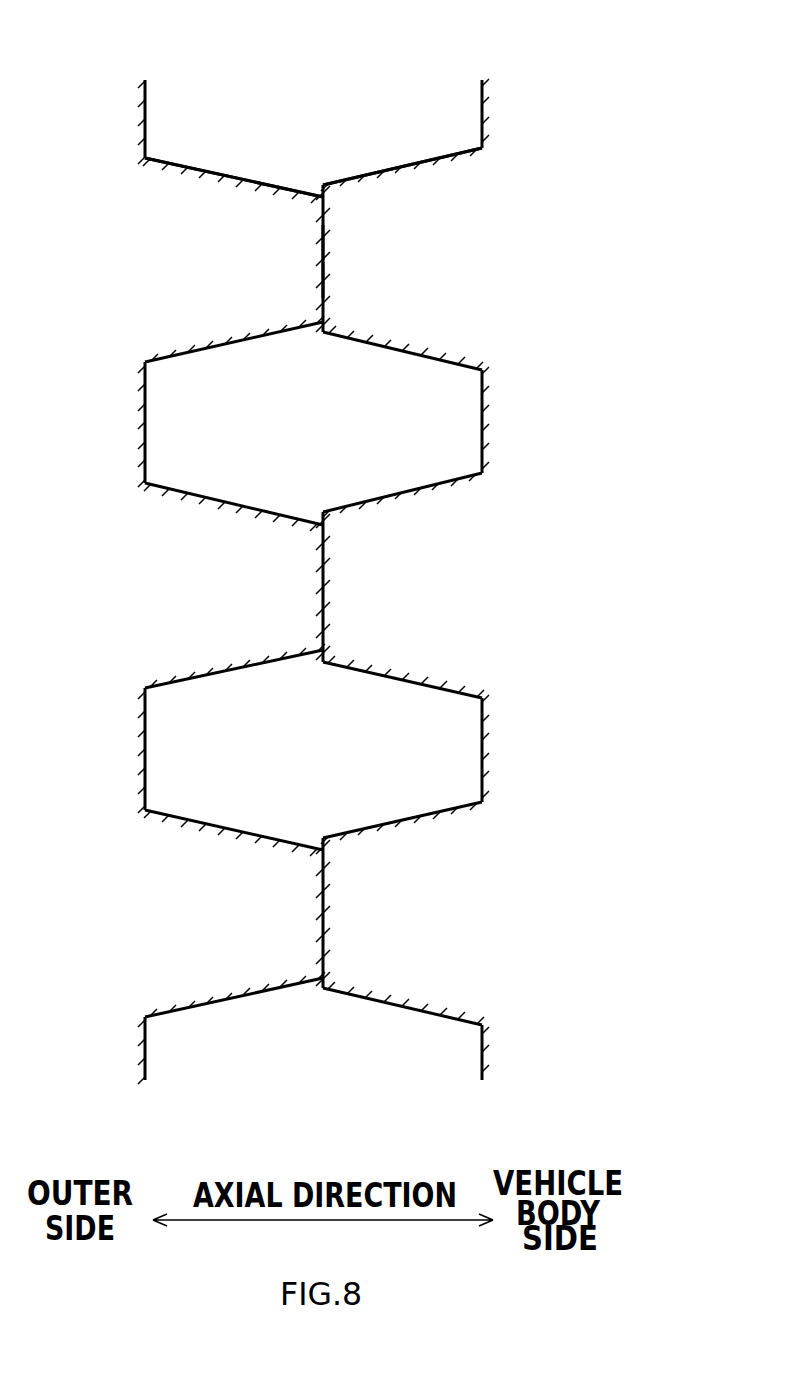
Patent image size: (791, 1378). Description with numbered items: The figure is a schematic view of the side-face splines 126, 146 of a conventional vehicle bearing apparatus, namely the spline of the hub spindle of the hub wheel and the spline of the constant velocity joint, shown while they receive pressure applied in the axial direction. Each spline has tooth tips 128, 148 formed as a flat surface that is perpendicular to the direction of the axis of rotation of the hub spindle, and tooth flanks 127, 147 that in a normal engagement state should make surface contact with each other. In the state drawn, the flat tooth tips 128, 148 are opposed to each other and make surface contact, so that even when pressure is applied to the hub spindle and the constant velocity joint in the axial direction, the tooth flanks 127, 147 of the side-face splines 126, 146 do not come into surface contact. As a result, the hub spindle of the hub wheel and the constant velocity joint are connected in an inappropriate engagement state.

The side-face spline 126 is at (172, 604).
The side-face spline 146 is at (507, 604).
The tooth flank 127 is at (254, 180).
The tooth flank 147 is at (382, 167).
The tooth tip 128 is at (322, 249).
The tooth tip 148 is at (333, 268).